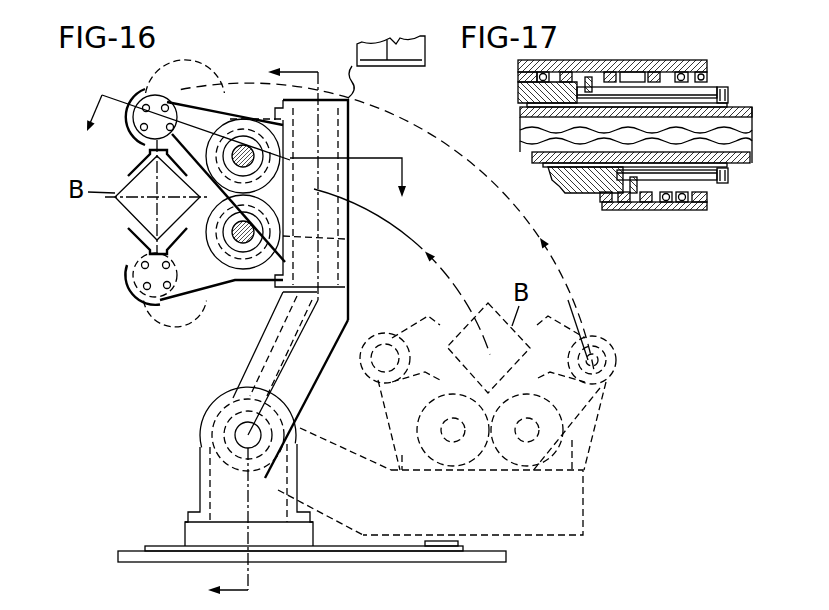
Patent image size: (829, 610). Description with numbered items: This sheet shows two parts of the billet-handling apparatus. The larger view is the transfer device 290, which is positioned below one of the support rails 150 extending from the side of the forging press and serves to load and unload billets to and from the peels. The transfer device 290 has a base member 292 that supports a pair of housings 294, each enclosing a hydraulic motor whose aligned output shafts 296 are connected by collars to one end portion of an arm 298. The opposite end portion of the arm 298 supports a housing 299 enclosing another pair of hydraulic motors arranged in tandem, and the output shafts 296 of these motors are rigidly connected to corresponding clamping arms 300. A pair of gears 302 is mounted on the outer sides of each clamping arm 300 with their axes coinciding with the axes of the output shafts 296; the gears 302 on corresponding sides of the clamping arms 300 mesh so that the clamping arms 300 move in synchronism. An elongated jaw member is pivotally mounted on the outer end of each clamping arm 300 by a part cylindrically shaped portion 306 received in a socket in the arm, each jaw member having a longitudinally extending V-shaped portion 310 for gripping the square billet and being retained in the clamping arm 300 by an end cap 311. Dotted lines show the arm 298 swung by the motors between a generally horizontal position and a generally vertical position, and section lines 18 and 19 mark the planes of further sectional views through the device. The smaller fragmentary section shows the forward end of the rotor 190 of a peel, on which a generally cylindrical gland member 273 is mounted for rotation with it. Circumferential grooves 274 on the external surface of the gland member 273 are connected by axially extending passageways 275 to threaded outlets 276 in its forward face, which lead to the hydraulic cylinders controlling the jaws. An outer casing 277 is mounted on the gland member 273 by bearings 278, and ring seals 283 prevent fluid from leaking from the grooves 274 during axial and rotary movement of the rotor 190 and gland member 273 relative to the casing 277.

In FIG. 16, the rail 150 is at (388, 80).
In FIG. 16, the section line 18— 18 is at (278, 330).
In FIG. 16, the section line 19— 19 is at (253, 133).
In FIG. 16, the transfer device 290 is at (190, 495).
In FIG. 16, the base member 292 is at (303, 558).
In FIG. 16, the housing 294 is at (217, 472).
In FIG. 16, the output shaft 296 is at (243, 427).
In FIG. 16, the arm 298 is at (262, 372).
In FIG. 16, the housing 299 is at (573, 440).
In FIG. 16, the clamping arm 300 is at (198, 115).
In FIG. 16, the gear 302 is at (348, 131).
In FIG. 16, the part cylindrically shaped portion 306 is at (160, 98).
In FIG. 16, the V-shaped portion 310 is at (140, 236).
In FIG. 16, the end cap 311 is at (135, 133).
In FIG. 17, the rotor 190 is at (545, 163).
In FIG. 17, the gland member 273 is at (518, 98).
In FIG. 17, the circumferential groove 274 is at (587, 73).
In FIG. 17, the passageway 275 is at (708, 93).
In FIG. 17, the threaded outlet 276 is at (723, 97).
In FIG. 17, the outer casing 277 is at (657, 65).
In FIG. 17, the bearing 278 is at (527, 90).
In FIG. 17, the ring seal 283 is at (567, 72).